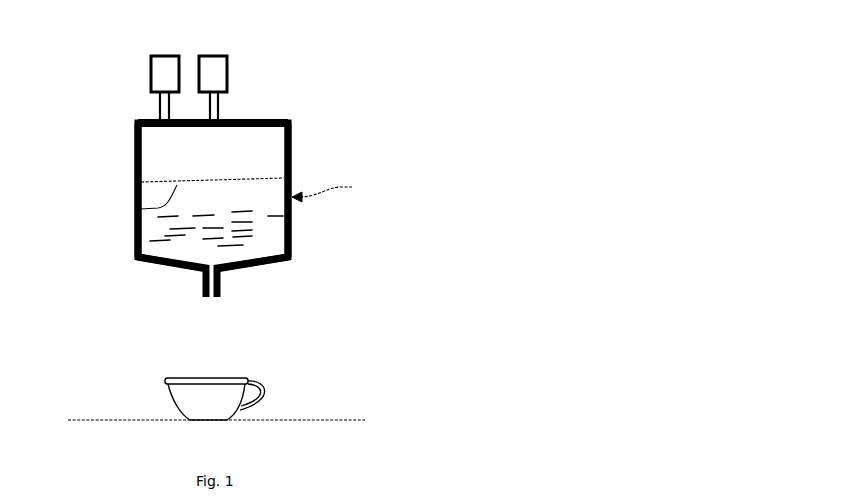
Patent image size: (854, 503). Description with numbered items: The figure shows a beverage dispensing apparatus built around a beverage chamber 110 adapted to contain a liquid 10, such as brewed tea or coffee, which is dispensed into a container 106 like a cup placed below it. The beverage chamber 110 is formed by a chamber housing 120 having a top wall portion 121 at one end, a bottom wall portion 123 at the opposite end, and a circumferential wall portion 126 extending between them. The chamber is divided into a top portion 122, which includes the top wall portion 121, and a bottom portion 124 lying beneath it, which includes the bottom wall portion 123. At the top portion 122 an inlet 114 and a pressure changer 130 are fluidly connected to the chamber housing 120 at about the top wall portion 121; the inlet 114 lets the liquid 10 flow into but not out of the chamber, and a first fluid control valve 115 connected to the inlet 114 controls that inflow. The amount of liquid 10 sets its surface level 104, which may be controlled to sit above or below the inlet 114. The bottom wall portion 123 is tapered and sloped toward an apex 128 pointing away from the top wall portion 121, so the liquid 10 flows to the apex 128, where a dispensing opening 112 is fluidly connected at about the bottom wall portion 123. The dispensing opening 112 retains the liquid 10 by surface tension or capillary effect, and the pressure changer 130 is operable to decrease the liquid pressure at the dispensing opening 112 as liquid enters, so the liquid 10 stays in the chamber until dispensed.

The liquid 10 is at (292, 218).
The surface level 104 is at (136, 208).
The container 106 is at (176, 396).
The beverage chamber 110 is at (339, 192).
The dispensing opening 112 is at (222, 290).
The inlet 114 is at (220, 118).
The first fluid control valve 115 is at (218, 55).
The chamber housing 120 is at (291, 165).
The top wall portion 121 is at (150, 118).
The top portion 122 is at (290, 118).
The bottom wall portion 123 is at (264, 269).
The bottom portion 124 is at (150, 265).
The circumferential wall portion 126 is at (135, 158).
The apex 128 is at (203, 273).
The pressure changer 130 is at (176, 72).